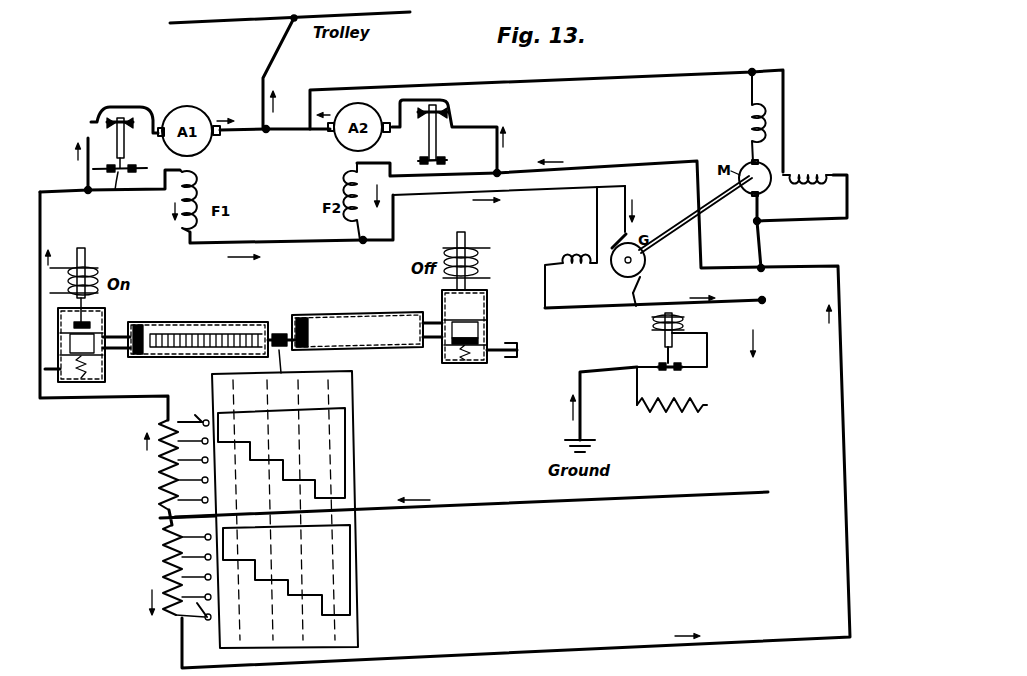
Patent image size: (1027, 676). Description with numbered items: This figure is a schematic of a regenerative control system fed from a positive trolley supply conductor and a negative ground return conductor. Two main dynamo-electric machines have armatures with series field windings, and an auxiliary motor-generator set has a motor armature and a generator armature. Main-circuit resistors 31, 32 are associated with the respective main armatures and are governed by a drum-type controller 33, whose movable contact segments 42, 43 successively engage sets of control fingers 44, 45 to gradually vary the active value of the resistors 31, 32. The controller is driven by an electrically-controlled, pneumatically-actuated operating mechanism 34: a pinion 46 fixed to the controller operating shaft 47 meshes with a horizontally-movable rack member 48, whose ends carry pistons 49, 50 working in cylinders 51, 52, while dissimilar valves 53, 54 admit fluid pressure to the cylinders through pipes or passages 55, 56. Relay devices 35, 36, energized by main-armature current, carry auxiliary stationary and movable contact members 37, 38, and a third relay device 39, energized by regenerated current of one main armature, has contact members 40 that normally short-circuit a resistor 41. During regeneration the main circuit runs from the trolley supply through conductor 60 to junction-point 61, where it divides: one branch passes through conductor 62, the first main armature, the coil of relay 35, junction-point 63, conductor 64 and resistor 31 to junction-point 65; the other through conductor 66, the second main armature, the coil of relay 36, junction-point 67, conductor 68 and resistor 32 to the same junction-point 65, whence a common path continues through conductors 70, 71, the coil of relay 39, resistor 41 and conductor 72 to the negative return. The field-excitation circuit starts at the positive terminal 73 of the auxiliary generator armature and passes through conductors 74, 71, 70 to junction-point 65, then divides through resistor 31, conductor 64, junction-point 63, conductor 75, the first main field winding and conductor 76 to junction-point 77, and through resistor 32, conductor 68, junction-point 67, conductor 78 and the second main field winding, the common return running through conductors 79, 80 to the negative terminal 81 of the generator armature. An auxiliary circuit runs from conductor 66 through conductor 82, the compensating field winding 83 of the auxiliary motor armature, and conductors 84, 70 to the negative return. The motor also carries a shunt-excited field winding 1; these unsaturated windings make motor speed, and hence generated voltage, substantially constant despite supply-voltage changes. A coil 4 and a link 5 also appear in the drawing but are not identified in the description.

The shunt-excited field winding 1 is at (816, 174).
The coil 4 is at (568, 258).
The link rod 5 is at (687, 231).
The main-circuit resistor 31 is at (157, 473).
The main-circuit resistor 32 is at (160, 566).
The controller 33 is at (352, 492).
The actuating mechanism 34 is at (287, 325).
The relay device 35 is at (108, 122).
The relay device 36 is at (449, 103).
The contact members 37 is at (114, 192).
The contact members 38 is at (447, 159).
The third relay device 39 is at (655, 331).
The contact members 40 is at (672, 369).
The resistor 41 is at (684, 414).
The movable contact segment 42 is at (340, 443).
The movable contact segment 43 is at (348, 568).
The control fingers 44 is at (192, 414).
The control fingers 45 is at (197, 623).
The pinion 46 is at (286, 329).
The operating shaft 47 is at (277, 375).
The rack member 48 is at (246, 327).
The piston 49 is at (146, 331).
The piston 50 is at (316, 318).
The cylinder 51 is at (214, 360).
The cylinder 52 is at (396, 352).
The valve 53 is at (104, 316).
The valve 54 is at (441, 305).
The pipe or passage 55 is at (106, 369).
The pipe or passage 56 is at (508, 358).
The conductor 60 is at (262, 97).
The junction-point 61 is at (264, 128).
The conductor 62 is at (243, 142).
The junction-point 63 is at (84, 190).
The conductor 64 is at (104, 306).
The junction-point 65 is at (177, 520).
The conductor 66 is at (298, 120).
The junction-point 67 is at (503, 171).
The conductor 68 is at (672, 161).
The conductor 70 is at (491, 516).
The conductor 71 is at (738, 309).
The conductor 72 is at (583, 410).
The positive terminal 73 is at (644, 279).
The conductor 74 is at (646, 297).
The conductor 75 is at (160, 193).
The conductor 76 is at (305, 249).
The junction-point 77 is at (363, 245).
The conductor 78 is at (420, 145).
The conductor 79 is at (396, 220).
The conductor 80 is at (638, 207).
The negative terminal 81 is at (615, 235).
The conductor 82 is at (442, 84).
The compensating field winding 83 is at (743, 117).
The conductor 84 is at (755, 236).